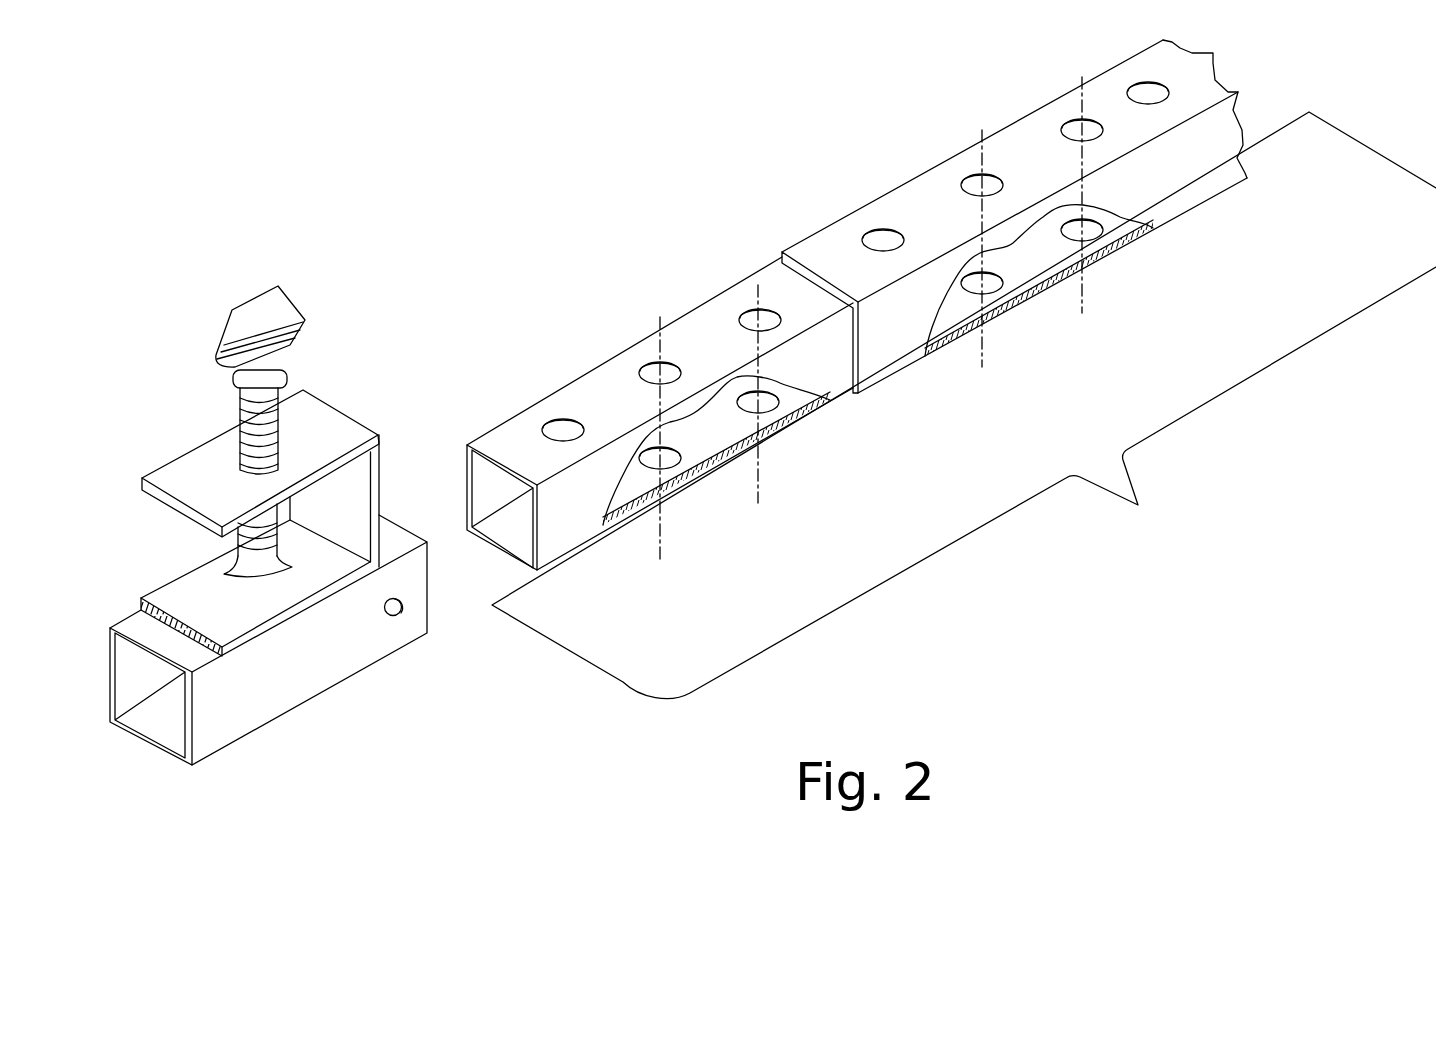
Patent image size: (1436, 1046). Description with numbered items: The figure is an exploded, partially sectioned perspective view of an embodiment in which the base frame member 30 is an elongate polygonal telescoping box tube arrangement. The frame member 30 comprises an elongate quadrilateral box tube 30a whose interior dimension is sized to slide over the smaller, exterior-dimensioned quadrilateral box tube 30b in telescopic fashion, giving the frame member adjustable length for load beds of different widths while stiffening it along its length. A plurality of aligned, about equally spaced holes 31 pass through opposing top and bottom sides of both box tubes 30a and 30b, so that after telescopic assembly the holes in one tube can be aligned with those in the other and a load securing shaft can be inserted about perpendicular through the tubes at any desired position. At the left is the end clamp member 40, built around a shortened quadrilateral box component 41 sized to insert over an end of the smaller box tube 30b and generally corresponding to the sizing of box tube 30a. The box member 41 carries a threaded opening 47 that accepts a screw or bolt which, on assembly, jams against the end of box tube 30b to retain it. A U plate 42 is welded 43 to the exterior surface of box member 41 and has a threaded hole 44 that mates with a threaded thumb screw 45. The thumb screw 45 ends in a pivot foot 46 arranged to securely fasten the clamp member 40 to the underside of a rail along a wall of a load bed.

The base frame member 30 is at (964, 405).
The quadrilateral box tube 30a is at (552, 543).
The quadrilateral box tube 30b is at (1173, 190).
The aligned spaced holes 31 is at (565, 432).
The end clamp member 40 is at (432, 687).
The quadrilateral box component 41 is at (295, 687).
The U plate 42 is at (313, 427).
The weld 43 is at (193, 648).
The threaded hole 44 is at (233, 447).
The threaded thumb screw 45 is at (238, 413).
The pivot foot 46 is at (257, 568).
The threaded opening 47 is at (387, 608).